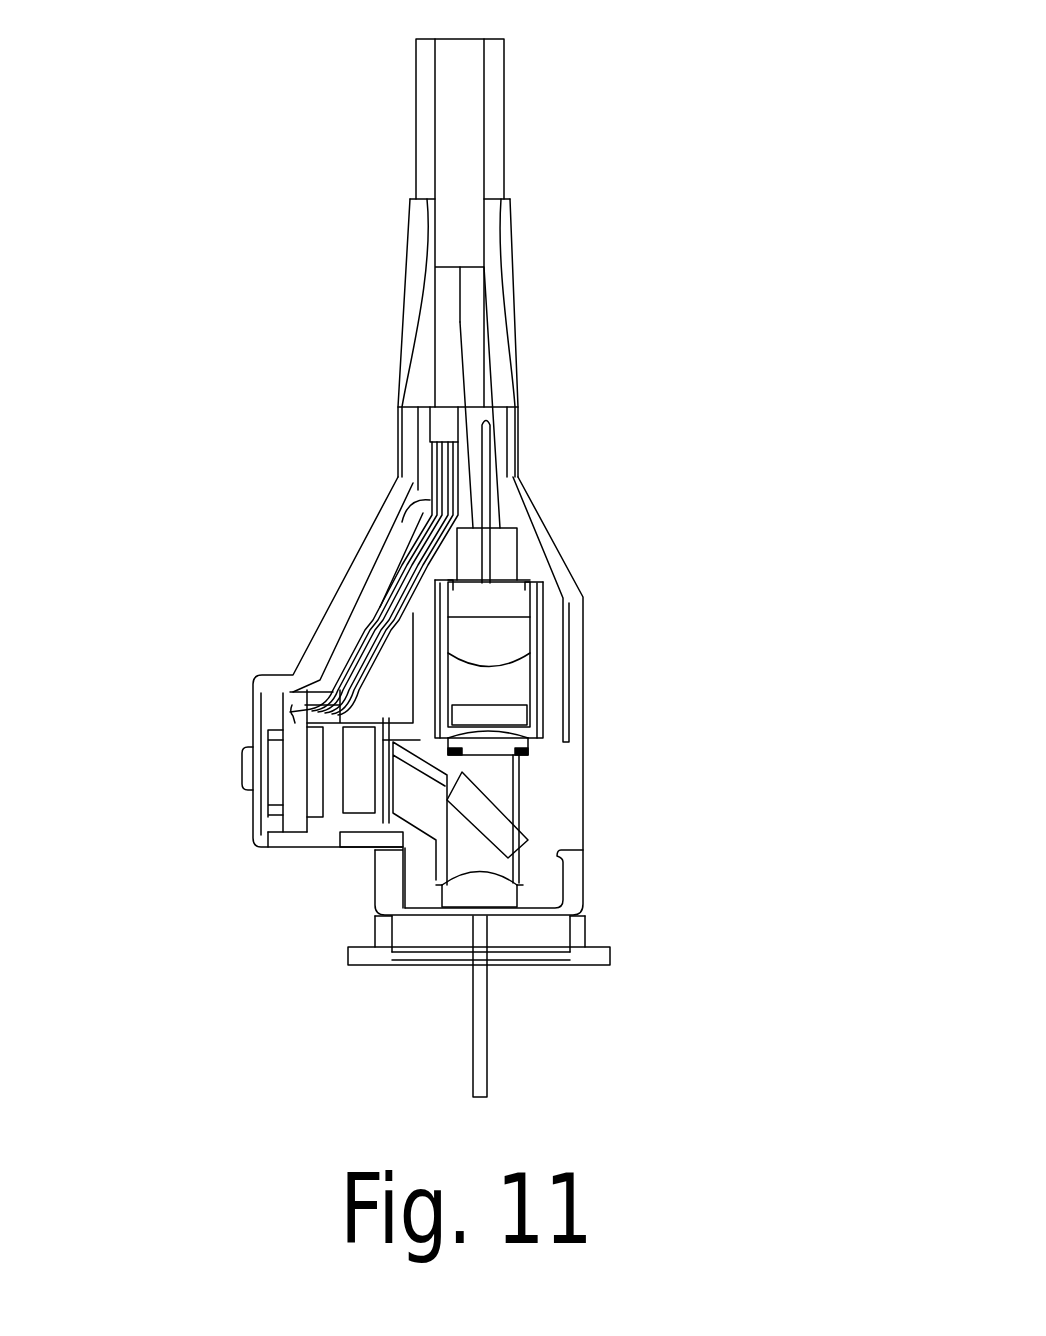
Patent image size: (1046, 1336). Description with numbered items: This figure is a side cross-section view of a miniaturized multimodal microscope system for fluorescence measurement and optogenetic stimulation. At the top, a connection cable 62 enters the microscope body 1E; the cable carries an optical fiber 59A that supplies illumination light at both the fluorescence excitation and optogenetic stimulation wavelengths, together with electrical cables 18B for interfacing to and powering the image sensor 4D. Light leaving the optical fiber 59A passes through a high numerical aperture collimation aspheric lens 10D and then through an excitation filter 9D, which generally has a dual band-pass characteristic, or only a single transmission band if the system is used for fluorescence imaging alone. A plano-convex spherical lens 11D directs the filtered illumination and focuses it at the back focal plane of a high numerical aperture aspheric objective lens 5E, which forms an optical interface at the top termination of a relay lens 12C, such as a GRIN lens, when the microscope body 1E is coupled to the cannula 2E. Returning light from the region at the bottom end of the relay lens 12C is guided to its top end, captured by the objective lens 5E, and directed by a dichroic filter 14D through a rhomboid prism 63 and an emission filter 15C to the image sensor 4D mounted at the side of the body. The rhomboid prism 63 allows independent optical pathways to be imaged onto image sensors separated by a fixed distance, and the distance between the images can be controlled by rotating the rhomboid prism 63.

The connection cable 62 is at (470, 135).
The optical fiber 59A is at (490, 355).
The electrical cables 18B is at (418, 548).
The microscope body 1E is at (377, 662).
The image sensor 4D is at (310, 775).
The high numerical aperture collimation aspheric lens 10D is at (528, 633).
The excitation filter 9D is at (528, 714).
The plano-convex spherical lens 11D is at (530, 744).
The dichroic filter 14D is at (530, 832).
The emission filter 15C is at (348, 820).
The rhomboid prism 63 is at (405, 850).
The cannula 2E is at (575, 875).
The high numerical aperture aspheric objective lens 5E is at (488, 900).
The relay lens 12C is at (492, 1027).